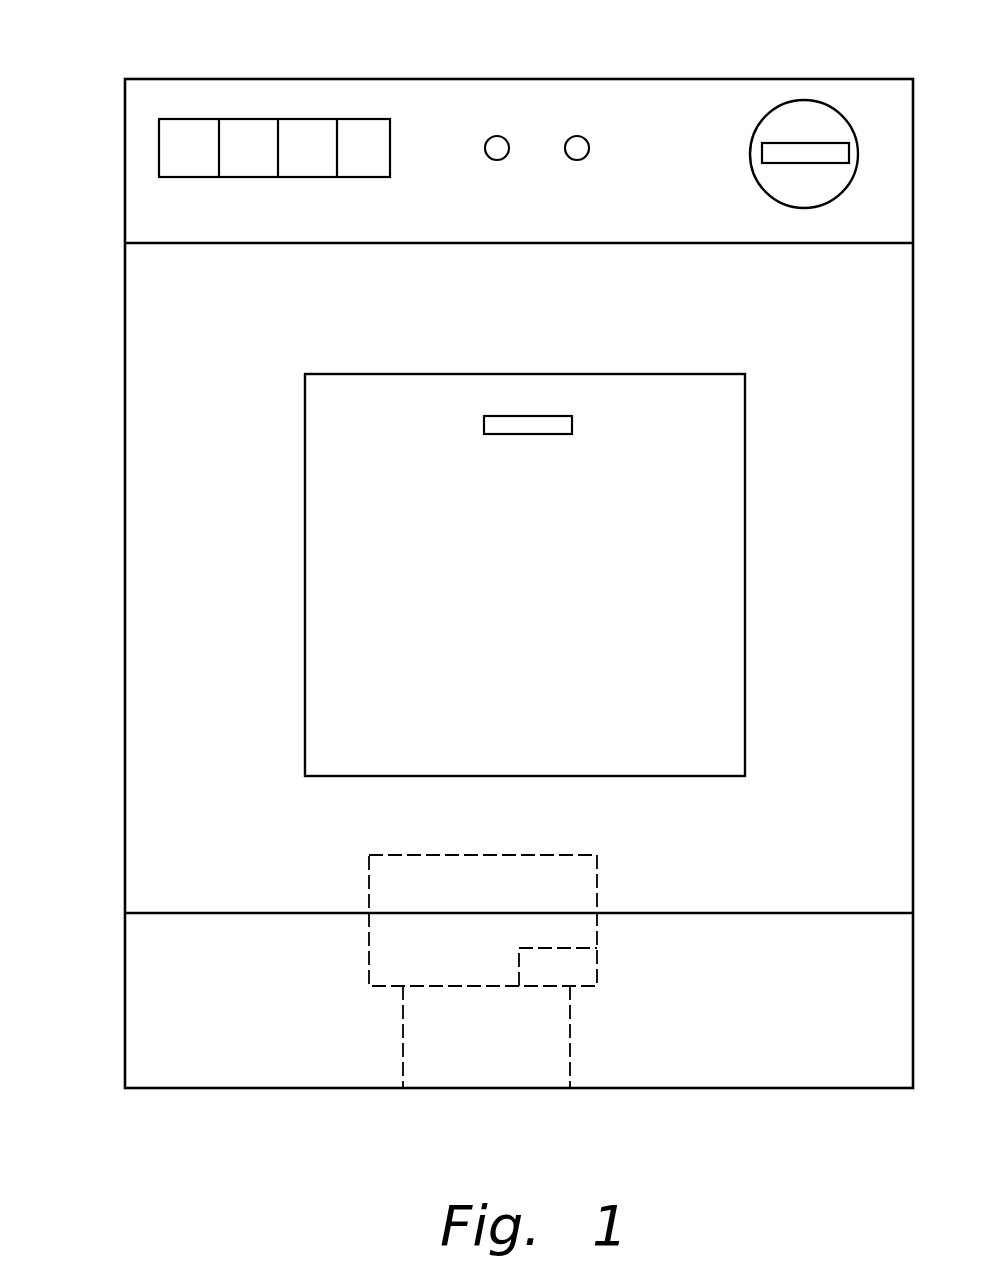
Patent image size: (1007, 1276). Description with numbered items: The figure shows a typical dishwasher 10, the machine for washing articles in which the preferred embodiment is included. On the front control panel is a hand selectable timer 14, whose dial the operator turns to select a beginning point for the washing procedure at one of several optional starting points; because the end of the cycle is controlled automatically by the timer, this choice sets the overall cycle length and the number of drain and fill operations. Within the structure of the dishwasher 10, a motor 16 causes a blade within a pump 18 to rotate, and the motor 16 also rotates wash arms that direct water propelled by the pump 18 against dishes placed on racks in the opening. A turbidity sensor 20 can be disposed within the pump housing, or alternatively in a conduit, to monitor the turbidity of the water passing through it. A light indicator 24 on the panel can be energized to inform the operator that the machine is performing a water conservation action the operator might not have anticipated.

The dishwasher 10 is at (125, 482).
The hand selectable timer 14 is at (808, 117).
The motor 16 is at (475, 1072).
The pump 18 is at (383, 884).
The turbidity sensor 20 is at (587, 968).
The light indicator 24 is at (492, 135).